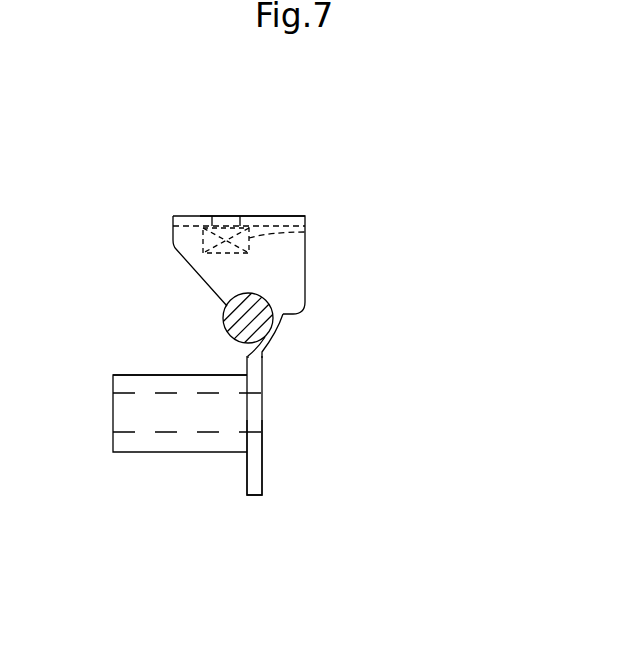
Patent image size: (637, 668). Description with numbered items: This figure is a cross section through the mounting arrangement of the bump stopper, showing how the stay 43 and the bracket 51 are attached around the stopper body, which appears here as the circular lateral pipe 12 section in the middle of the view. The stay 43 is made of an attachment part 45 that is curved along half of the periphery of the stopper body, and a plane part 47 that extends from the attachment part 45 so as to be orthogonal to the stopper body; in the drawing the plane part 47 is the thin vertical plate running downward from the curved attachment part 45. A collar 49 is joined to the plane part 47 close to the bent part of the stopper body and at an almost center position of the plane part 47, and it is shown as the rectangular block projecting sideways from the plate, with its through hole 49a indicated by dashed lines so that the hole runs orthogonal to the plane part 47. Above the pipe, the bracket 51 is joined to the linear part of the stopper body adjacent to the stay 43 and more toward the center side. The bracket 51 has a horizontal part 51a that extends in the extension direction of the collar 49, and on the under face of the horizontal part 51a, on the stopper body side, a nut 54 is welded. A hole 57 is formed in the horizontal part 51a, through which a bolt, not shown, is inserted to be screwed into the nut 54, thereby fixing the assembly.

The lateral pipe 12 is at (226, 313).
The stay 43 is at (262, 472).
The attachment part 45 is at (282, 343).
The plane part 47 is at (255, 452).
The collar 49 is at (153, 442).
The through hole 49a is at (158, 393).
The bracket 51 is at (282, 275).
The horizontal part 51a is at (273, 217).
The nut 54 is at (306, 233).
The hole 57 is at (212, 226).